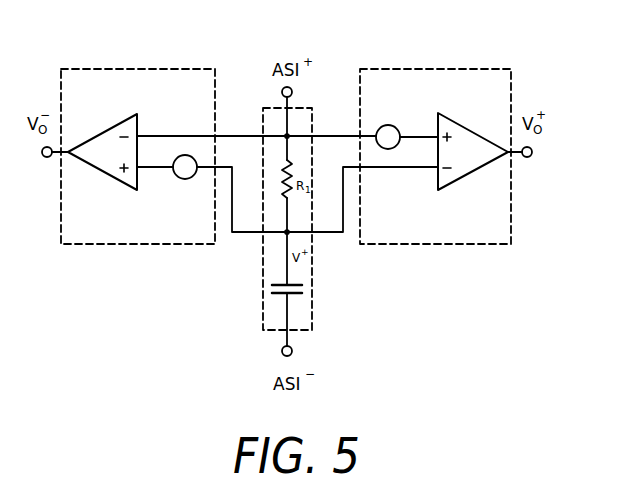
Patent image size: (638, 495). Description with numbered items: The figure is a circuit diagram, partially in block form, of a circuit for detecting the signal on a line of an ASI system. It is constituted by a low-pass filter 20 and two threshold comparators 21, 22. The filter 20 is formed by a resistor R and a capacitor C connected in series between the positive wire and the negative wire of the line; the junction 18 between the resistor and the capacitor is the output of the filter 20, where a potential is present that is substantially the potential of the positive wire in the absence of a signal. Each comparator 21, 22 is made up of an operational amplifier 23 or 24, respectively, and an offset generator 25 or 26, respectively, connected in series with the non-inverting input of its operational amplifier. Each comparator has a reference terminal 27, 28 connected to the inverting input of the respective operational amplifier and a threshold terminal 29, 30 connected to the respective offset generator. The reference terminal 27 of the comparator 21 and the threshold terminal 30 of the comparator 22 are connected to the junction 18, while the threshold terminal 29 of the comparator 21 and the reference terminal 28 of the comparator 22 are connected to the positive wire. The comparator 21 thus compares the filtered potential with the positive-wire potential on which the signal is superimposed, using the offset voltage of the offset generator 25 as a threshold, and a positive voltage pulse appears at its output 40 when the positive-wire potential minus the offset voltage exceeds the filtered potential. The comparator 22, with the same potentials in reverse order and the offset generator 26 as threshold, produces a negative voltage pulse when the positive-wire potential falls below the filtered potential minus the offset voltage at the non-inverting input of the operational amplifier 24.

The junction 18 is at (287, 233).
The low-pass filter 20 is at (300, 313).
The threshold comparator 21 is at (437, 82).
The threshold comparator 22 is at (155, 82).
The operational amplifier 23 is at (470, 162).
The operational amplifier 24 is at (103, 160).
The offset generator 25 is at (400, 128).
The offset generator 26 is at (180, 170).
The reference terminal 27 is at (348, 170).
The reference terminal 28 is at (237, 133).
The threshold terminal 29 is at (338, 135).
The threshold terminal 30 is at (223, 170).
The output 40 is at (513, 155).